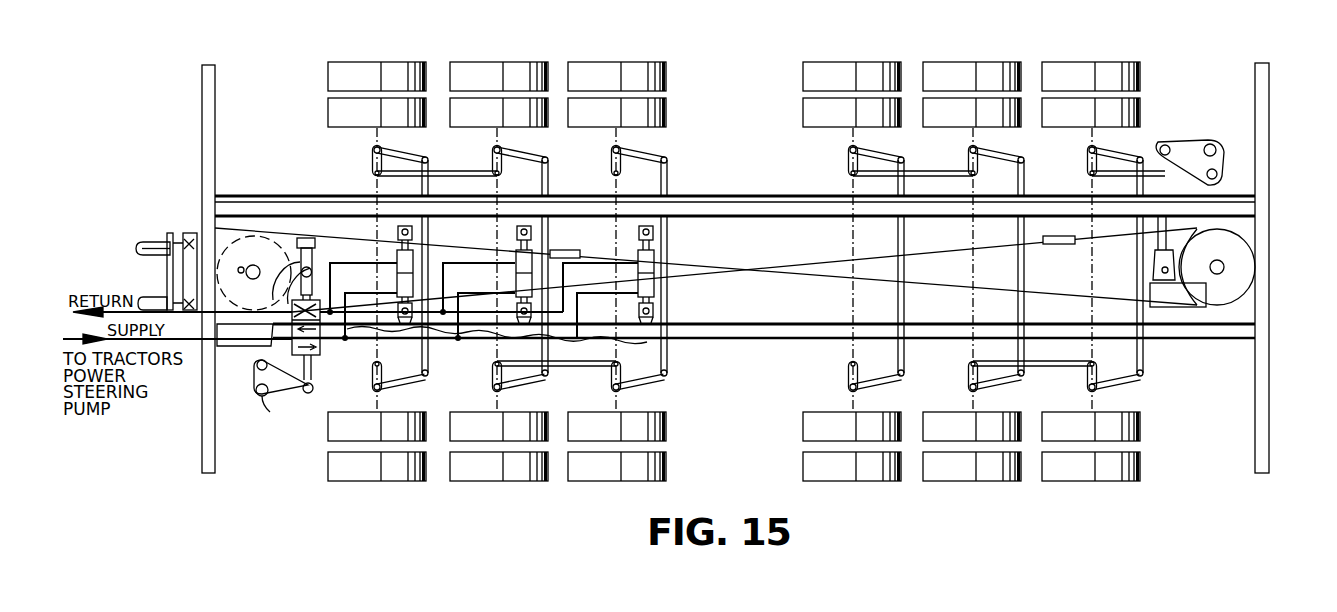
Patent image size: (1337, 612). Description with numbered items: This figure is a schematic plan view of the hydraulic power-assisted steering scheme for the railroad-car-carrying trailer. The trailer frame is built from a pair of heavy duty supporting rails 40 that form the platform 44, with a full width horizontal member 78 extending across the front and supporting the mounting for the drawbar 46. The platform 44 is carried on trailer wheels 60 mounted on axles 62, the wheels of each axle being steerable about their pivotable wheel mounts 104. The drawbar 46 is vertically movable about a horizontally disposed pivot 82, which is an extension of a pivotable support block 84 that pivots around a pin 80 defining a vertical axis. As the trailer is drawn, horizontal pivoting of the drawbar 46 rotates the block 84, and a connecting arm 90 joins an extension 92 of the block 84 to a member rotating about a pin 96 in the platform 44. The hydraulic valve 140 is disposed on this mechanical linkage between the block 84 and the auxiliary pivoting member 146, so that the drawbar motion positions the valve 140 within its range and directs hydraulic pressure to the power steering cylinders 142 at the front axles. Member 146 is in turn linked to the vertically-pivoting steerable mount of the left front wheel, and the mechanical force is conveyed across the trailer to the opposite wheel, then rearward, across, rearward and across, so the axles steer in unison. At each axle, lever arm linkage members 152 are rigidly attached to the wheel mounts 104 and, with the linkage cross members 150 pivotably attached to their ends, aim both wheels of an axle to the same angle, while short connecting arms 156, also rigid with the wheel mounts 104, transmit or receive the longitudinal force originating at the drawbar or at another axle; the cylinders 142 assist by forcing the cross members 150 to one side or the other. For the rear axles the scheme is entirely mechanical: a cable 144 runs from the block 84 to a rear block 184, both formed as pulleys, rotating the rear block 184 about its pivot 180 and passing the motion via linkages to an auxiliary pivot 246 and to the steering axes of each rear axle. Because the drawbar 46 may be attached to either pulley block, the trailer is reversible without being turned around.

The supporting rails 40 is at (718, 217).
The platform 44 is at (791, 194).
The drawbar 46 is at (150, 242).
The trailer wheels 60 is at (483, 62).
The axles 62 is at (375, 253).
The horizontal member 78 is at (203, 128).
The pin 80 is at (245, 264).
The pivot 82 is at (186, 240).
The pivotable support block 84 is at (251, 236).
The connecting arm 90 is at (283, 292).
The extension 92 is at (300, 240).
The pin 96 is at (268, 415).
The steering knuckle 104 is at (372, 150).
The hydraulic valve 140 is at (318, 365).
The power steering cylinders 142 is at (396, 286).
The cable 144 is at (838, 258).
The auxiliary pivoting member 146 is at (259, 379).
The linkage cross members 150 is at (425, 340).
The lever arm linkage members 152 is at (400, 153).
The short connecting arms 156 is at (437, 172).
The pivot 180 is at (1222, 270).
The rear block 184 is at (1240, 245).
The auxiliary pivot 246 is at (1197, 145).